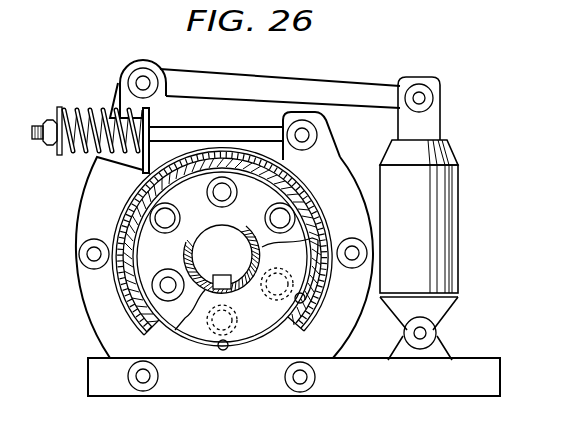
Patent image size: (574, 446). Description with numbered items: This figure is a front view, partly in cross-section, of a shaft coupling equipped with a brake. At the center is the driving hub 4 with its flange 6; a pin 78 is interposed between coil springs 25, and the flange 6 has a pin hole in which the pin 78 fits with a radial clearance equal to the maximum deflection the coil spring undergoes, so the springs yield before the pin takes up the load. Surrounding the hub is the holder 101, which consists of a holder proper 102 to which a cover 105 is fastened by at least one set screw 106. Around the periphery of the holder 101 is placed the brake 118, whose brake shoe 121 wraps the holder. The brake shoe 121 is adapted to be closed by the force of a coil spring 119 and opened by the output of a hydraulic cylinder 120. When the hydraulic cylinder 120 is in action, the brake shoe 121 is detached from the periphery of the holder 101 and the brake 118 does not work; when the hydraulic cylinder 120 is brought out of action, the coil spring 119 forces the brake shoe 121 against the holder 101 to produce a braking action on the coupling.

The driving hub 4 is at (238, 289).
The flange 6 is at (248, 180).
The coil springs 25 is at (235, 195).
The pin 78 is at (167, 214).
The holder 101 is at (178, 156).
The holder proper 102 is at (227, 155).
The cover 105 is at (258, 333).
The set screw 106 is at (225, 350).
The brake 118 is at (70, 228).
The coil spring 119 is at (84, 114).
The hydraulic cylinder 120 is at (447, 210).
The brake shoe 121 is at (127, 204).